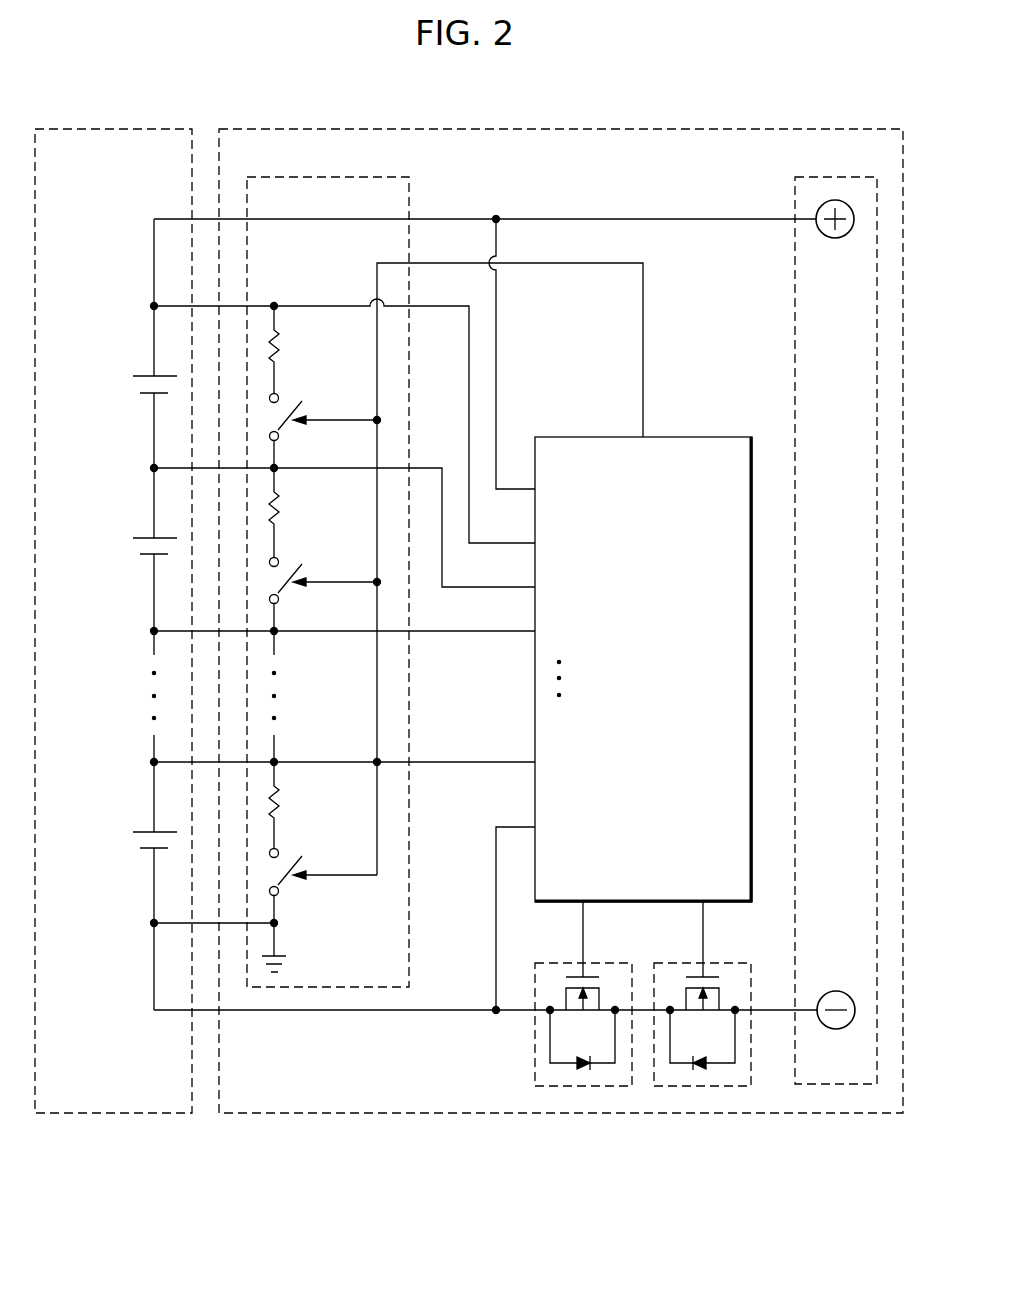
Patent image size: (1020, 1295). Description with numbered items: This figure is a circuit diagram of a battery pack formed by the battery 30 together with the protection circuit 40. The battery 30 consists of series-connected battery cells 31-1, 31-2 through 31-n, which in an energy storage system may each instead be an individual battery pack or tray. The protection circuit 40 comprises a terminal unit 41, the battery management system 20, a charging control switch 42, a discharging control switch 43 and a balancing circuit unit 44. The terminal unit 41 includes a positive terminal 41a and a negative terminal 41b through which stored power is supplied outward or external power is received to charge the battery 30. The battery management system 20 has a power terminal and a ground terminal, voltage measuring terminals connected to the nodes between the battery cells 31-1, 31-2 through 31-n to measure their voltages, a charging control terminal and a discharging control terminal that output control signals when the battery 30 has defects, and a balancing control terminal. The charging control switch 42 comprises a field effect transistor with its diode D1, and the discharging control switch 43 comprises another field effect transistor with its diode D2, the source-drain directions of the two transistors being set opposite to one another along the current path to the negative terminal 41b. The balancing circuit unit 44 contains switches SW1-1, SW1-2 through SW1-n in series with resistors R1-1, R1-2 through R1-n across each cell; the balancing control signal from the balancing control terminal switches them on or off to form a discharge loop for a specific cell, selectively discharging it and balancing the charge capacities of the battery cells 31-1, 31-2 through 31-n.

The BMS 20 is at (694, 437).
The battery 30 is at (117, 129).
The battery cell 31-1 is at (140, 385).
The battery cell 31-2 is at (140, 547).
The battery cell 31-n is at (140, 841).
The protection circuit 40 is at (565, 129).
The terminal unit 41 is at (838, 177).
The positive terminal 41a is at (835, 238).
The negative terminal 41b is at (835, 991).
The charging control switch 42 is at (720, 963).
The discharging control switch 43 is at (600, 963).
The balancing circuit unit 44 is at (323, 177).
The resistor R1-1 is at (303, 350).
The resistor R1-2 is at (303, 513).
The resistor R1-n is at (303, 805).
The switch SW1-1 is at (325, 420).
The switch SW1-2 is at (325, 594).
The switch SW1-n is at (324, 875).
The diode D1 is at (700, 1071).
The diode D2 is at (584, 1071).